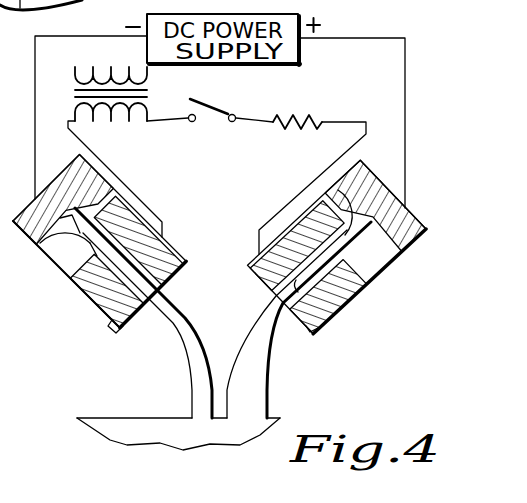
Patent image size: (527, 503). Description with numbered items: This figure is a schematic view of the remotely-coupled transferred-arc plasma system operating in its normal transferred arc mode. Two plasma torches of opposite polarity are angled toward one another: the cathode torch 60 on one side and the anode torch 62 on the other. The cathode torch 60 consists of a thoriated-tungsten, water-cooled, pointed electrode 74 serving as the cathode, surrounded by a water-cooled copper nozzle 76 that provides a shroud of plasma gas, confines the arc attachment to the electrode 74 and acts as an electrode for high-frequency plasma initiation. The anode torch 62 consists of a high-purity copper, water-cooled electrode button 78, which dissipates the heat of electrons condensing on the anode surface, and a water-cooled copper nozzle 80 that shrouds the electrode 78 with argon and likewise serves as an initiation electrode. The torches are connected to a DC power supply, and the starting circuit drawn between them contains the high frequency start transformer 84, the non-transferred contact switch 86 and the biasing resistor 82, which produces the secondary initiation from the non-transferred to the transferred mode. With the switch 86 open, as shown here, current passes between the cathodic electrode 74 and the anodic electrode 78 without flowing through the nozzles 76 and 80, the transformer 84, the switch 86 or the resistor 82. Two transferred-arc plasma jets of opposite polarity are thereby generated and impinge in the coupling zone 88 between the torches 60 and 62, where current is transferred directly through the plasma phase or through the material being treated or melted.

The cathode torch 60 is at (88, 310).
The anode torch 62 is at (383, 278).
The pointed electrode 74 is at (80, 275).
The nozzle 76 is at (114, 333).
The electrode button 78 is at (337, 300).
The nozzle 80 is at (307, 330).
The biasing resistor 82 is at (318, 117).
The high frequency start transformer 84 is at (117, 67).
The non-transferred contact switch 86 is at (218, 110).
The coupling zone 88 is at (222, 432).